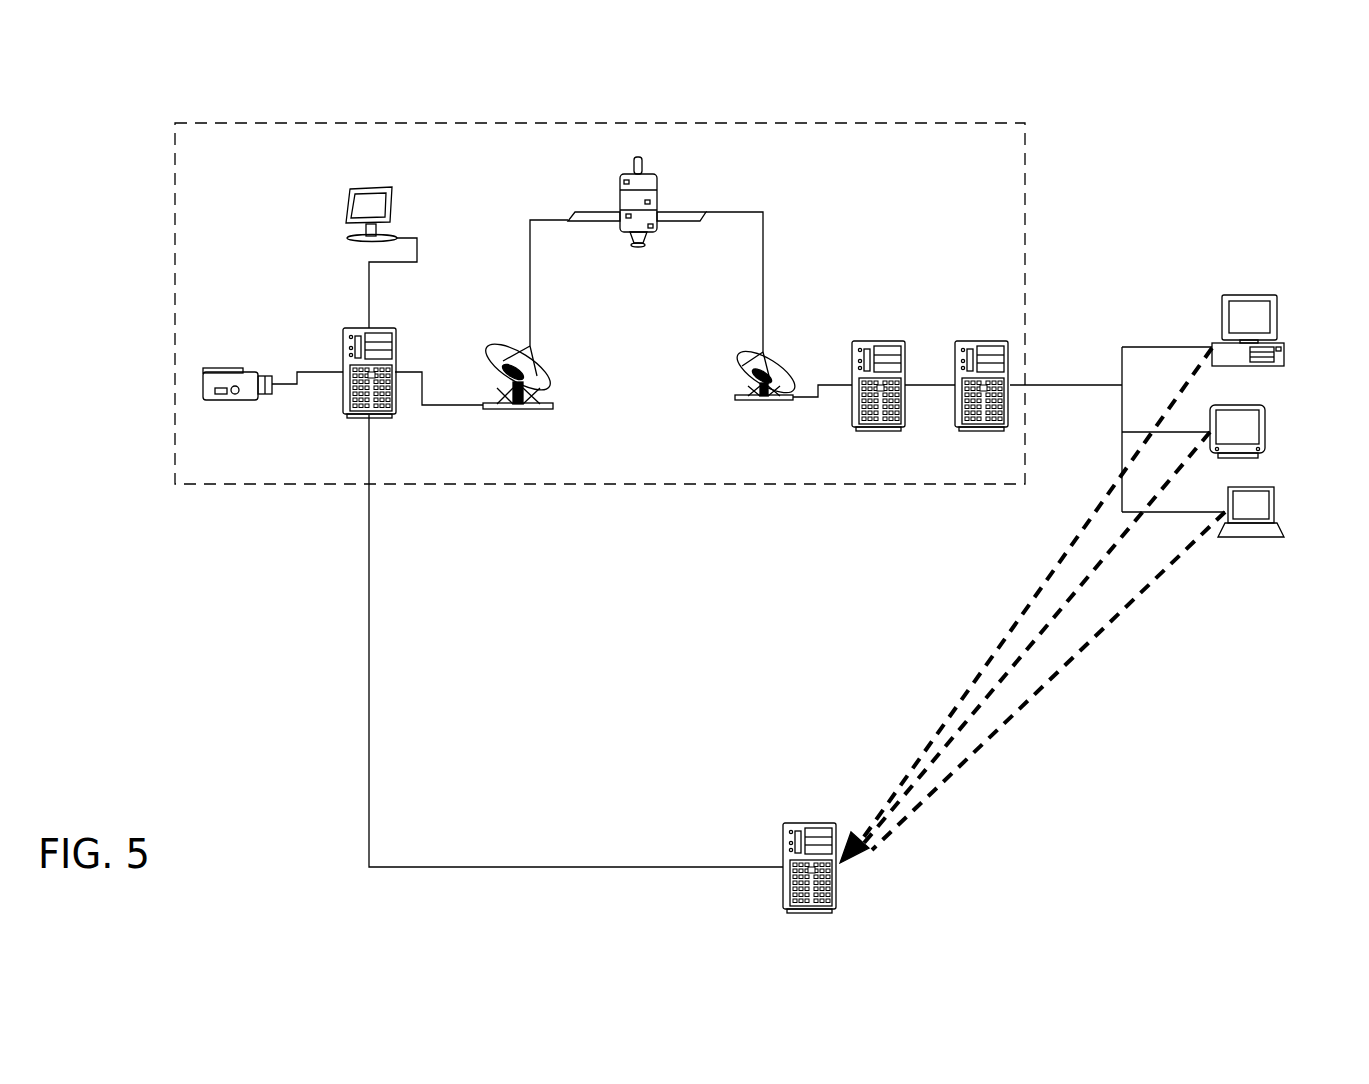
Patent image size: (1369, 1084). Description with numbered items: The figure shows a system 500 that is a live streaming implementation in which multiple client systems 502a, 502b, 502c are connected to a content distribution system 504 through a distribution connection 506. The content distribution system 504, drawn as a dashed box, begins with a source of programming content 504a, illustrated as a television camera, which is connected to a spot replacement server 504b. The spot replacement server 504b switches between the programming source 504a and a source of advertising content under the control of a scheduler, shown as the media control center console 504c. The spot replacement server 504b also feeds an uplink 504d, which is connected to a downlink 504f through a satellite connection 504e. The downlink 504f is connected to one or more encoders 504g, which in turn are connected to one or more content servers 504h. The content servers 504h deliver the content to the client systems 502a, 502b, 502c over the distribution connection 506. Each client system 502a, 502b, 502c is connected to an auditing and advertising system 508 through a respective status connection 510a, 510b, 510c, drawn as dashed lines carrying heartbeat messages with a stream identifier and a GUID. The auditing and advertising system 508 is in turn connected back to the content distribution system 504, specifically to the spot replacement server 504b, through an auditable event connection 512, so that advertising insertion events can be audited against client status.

The system 500 is at (1240, 137).
The content distribution system 504 is at (256, 123).
The source of programming content 504a is at (236, 372).
The spot replacement server 504b is at (345, 330).
The media control center console 504c is at (355, 190).
The uplink 504d is at (540, 368).
The satellite connection 504e is at (650, 175).
The downlink 504f is at (777, 352).
The encoder 504g is at (898, 340).
The content server 504h is at (972, 340).
The distribution connection 506 is at (1062, 385).
The client system 502a is at (1267, 300).
The client system 502b is at (1265, 430).
The client system 502c is at (1280, 520).
The auditing and advertising system 508 is at (818, 822).
The status connection 510a is at (1093, 512).
The status connection 510b is at (1147, 505).
The status connection 510c is at (1143, 590).
The auditable event connection 512 is at (370, 688).